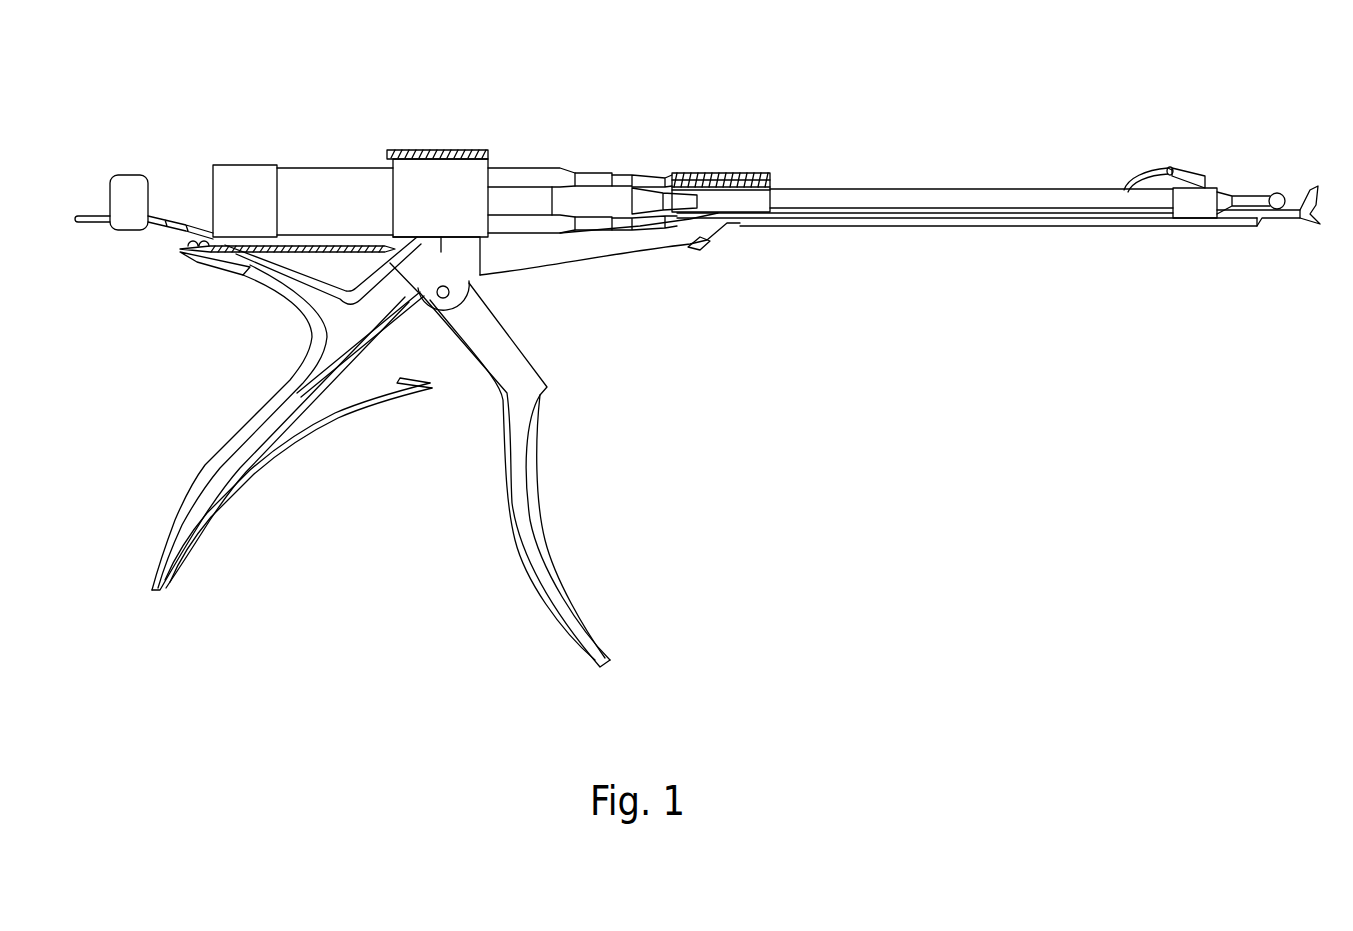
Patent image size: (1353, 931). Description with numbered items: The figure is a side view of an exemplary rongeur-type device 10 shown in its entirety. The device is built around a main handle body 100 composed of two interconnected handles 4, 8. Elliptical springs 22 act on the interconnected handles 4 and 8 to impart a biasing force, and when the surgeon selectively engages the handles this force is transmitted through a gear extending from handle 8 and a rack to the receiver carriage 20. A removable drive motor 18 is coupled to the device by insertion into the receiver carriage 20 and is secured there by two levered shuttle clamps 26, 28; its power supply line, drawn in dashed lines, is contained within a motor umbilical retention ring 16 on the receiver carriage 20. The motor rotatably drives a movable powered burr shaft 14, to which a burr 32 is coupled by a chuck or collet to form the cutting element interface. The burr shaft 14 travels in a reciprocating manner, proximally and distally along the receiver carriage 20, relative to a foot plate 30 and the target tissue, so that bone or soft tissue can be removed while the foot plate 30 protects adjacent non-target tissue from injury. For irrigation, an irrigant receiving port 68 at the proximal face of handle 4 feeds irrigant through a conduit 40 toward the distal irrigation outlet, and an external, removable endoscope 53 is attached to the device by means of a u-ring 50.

The handle 4 is at (181, 470).
The handle 8 is at (565, 548).
The rongeur-type device 10 is at (698, 354).
The movable powered burr shaft 14 is at (957, 174).
The motor umbilical retention ring 16 is at (118, 161).
The removable drive motor 18 is at (326, 150).
The receiver carriage 20 is at (887, 239).
The elliptical springs 22 is at (349, 425).
The levered shuttle clamp 26 is at (453, 139).
The levered shuttle clamp 28 is at (750, 163).
The foot plate 30 is at (1307, 229).
The burr 32 is at (1271, 180).
The conduit 40 is at (1130, 245).
The u-ring 50 is at (1182, 161).
The endoscope 53 is at (1216, 174).
The irrigant receiving port 68 is at (178, 262).
The main handle body 100 is at (698, 354).